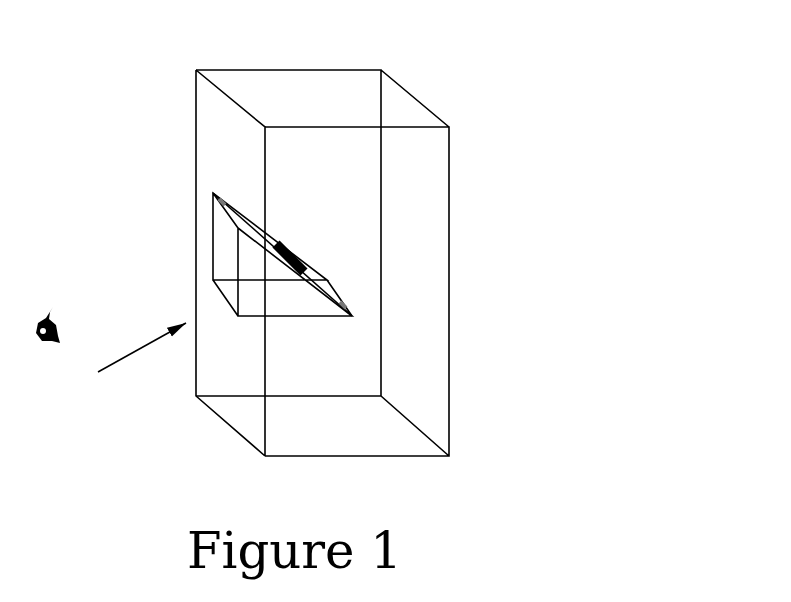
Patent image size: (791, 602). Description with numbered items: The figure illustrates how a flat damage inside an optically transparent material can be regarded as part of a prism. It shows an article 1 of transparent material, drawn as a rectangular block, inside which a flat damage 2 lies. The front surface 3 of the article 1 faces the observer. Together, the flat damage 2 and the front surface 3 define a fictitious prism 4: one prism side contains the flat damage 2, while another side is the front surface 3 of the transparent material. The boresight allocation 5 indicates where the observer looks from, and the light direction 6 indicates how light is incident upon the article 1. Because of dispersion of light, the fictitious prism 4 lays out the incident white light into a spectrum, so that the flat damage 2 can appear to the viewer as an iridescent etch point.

The article 1 is at (357, 95).
The flat damage 2 is at (295, 246).
The front surface of the article 3 is at (213, 110).
The fictitious prism 4 is at (226, 246).
The boresight allocation 5 is at (182, 290).
The light direction 6 is at (122, 357).